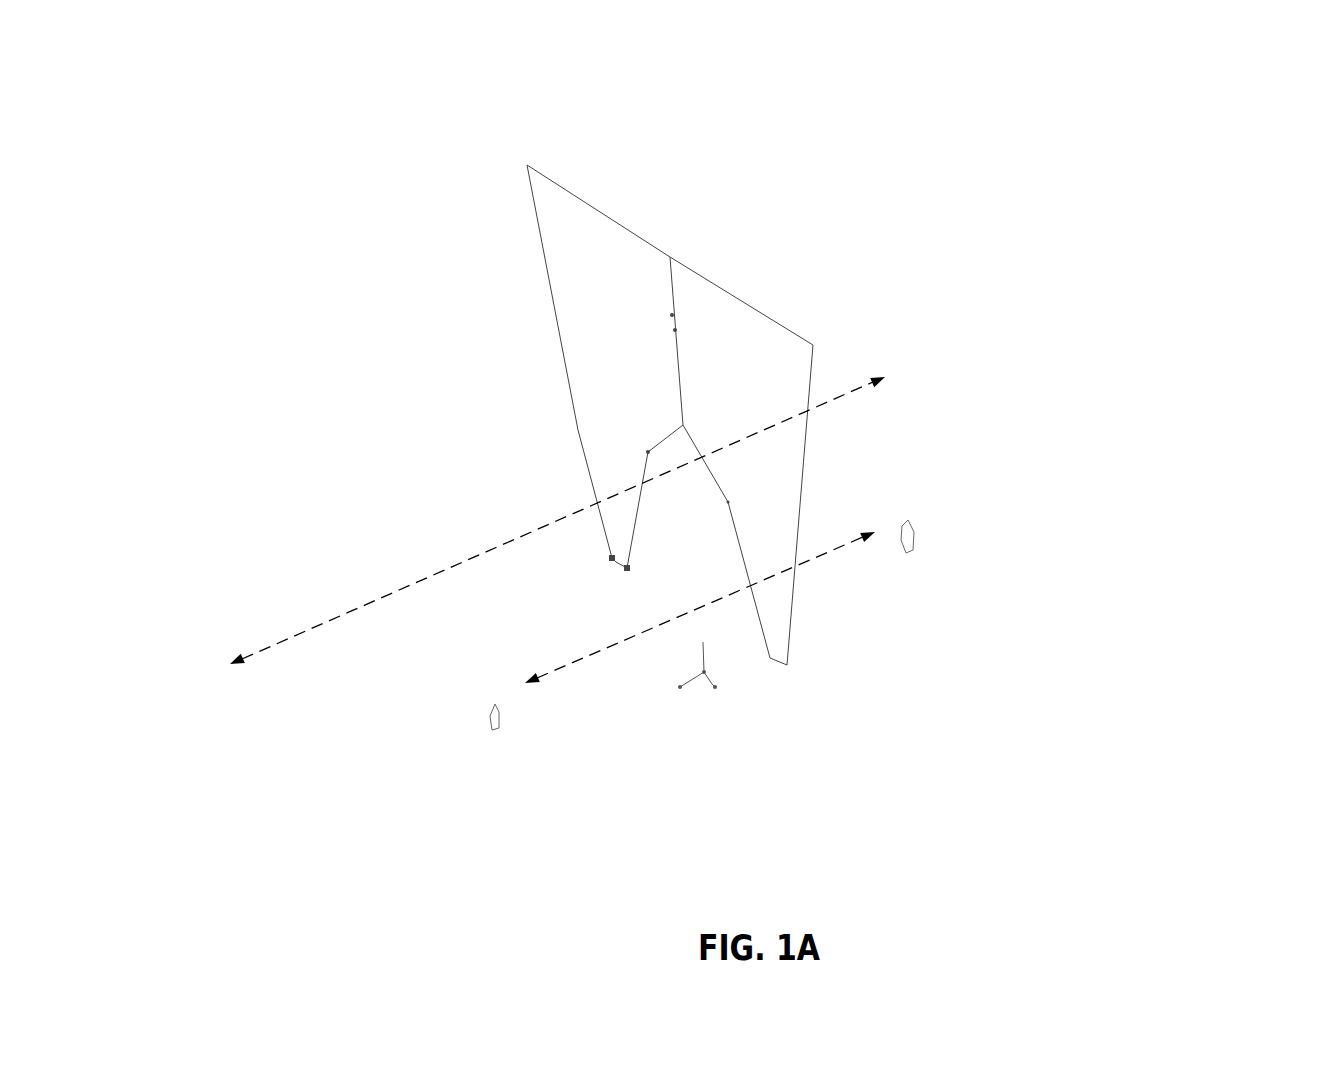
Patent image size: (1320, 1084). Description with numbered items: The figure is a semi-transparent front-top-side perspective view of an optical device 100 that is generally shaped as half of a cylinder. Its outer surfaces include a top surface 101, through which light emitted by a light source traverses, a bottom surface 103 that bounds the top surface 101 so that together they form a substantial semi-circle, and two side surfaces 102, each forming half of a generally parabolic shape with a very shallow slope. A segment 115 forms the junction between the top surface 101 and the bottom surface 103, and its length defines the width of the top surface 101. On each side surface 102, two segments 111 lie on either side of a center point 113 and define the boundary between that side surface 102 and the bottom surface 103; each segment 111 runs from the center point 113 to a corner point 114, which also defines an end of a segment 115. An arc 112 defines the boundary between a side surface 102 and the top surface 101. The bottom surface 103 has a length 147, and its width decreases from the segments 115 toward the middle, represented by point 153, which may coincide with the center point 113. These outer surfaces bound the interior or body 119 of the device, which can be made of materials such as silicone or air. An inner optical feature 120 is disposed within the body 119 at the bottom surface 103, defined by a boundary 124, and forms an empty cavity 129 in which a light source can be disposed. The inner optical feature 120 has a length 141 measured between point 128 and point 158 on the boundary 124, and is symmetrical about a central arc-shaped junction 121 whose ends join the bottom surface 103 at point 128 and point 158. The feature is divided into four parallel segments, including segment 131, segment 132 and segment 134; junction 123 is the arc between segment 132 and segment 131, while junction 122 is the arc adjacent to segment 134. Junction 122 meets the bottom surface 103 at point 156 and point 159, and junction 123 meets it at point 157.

The optical device 100 is at (292, 92).
The top surface 101 is at (932, 267).
The side surface 102 is at (1077, 440).
The bottom surface 103 is at (1060, 567).
The segment 111 is at (1042, 599).
The arc 112 is at (405, 243).
The center point 113 is at (787, 665).
The corner point 114 is at (1173, 553).
The segment 115 is at (372, 757).
The body 119 is at (915, 348).
The inner optical feature 120 is at (855, 452).
The junction 121 is at (832, 437).
The junction 122 is at (837, 513).
The junction 123 is at (550, 550).
The boundary 124 is at (820, 622).
The point 128 is at (875, 535).
The cavity 129 is at (823, 572).
The segment 131 is at (635, 523).
The segment 132 is at (665, 440).
The segment 134 is at (550, 330).
The length 141 is at (700, 607).
The length 147 is at (557, 520).
The point 153 is at (772, 658).
The point 156 is at (863, 582).
The point 157 is at (528, 647).
The point 158 is at (523, 682).
The point 159 is at (607, 693).